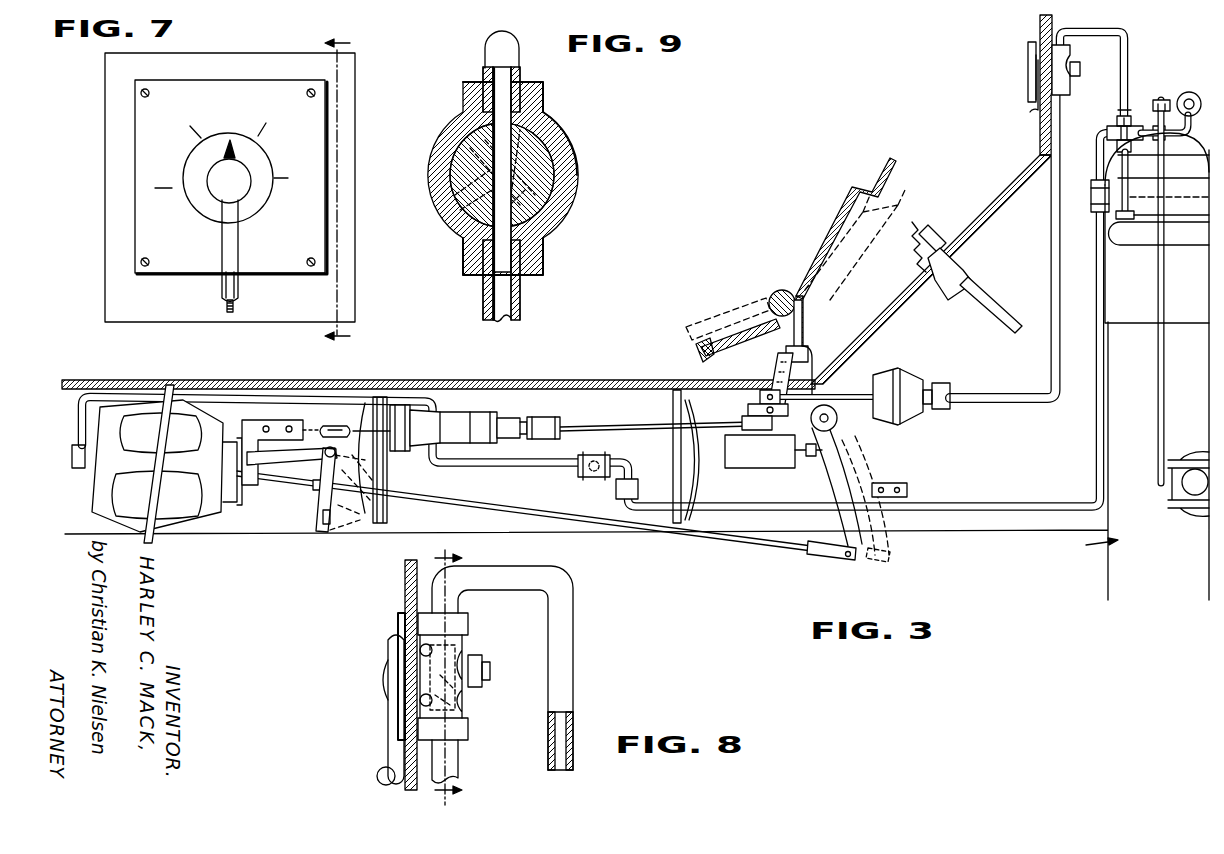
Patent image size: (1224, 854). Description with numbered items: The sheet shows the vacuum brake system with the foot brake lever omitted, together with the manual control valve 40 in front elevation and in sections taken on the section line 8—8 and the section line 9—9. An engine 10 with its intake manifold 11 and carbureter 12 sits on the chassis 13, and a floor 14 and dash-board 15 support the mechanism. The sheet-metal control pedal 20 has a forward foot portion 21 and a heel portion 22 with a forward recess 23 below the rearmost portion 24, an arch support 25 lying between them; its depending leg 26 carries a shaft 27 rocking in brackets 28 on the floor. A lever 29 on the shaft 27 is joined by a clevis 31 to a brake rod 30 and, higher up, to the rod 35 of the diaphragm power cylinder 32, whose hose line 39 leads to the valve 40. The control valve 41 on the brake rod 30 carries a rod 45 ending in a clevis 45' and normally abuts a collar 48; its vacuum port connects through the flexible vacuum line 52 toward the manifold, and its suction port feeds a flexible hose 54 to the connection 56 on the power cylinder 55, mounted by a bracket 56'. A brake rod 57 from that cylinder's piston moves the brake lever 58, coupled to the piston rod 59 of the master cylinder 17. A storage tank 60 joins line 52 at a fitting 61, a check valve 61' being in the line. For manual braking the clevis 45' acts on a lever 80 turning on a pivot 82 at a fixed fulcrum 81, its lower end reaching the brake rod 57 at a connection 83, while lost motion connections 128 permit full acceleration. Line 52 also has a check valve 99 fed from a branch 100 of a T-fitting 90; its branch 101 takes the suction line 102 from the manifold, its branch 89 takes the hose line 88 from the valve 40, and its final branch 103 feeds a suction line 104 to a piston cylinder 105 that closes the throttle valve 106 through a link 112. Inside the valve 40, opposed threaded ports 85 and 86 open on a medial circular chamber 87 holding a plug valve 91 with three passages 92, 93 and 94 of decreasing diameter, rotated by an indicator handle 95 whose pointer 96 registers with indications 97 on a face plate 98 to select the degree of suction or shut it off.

In FIG. 7, the section line 8— 8 is at (337, 187).
In FIG. 8, the section line 9— 9 is at (457, 676).
In FIG. 3, the engine 10 is at (1090, 552).
In FIG. 3, the intake manifold 11 is at (1192, 240).
In FIG. 3, the carbureter 12 is at (1166, 466).
In FIG. 3, the chassis 13 is at (971, 530).
In FIG. 3, the floor 14 is at (296, 381).
In FIG. 7, the dash-board 15 is at (348, 283).
In FIG. 8, the dash-board 15 is at (405, 592).
In FIG. 3, the dash-board 15 is at (1040, 32).
In FIG. 3, the master cylinder 17 is at (770, 454).
In FIG. 3, the foot control pedal 20 is at (848, 189).
In FIG. 3, the forward foot portion 21 is at (840, 214).
In FIG. 3, the heel portion 22 is at (690, 342).
In FIG. 3, the forward recess 23 is at (752, 344).
In FIG. 3, the rearmost portion 24 is at (703, 356).
In FIG. 3, the arch support 25 is at (779, 292).
In FIG. 3, the depending leg 26 is at (802, 318).
In FIG. 3, the shaft 27 is at (806, 344).
In FIG. 3, the brackets 28 is at (813, 362).
In FIG. 3, the lever 29 is at (773, 380).
In FIG. 3, the brake rod 30 is at (692, 421).
In FIG. 3, the clevis 31 is at (750, 411).
In FIG. 3, the power cylinder 32 is at (906, 380).
In FIG. 3, the rod 35 is at (850, 394).
In FIG. 9, the hose line 39 is at (512, 290).
In FIG. 8, the hose line 39 is at (458, 756).
In FIG. 3, the hose line 39 is at (1040, 402).
In FIG. 9, the manual control valve 40 is at (577, 176).
In FIG. 8, the manual control valve 40 is at (466, 650).
In FIG. 3, the manual control valve 40 is at (1074, 68).
In FIG. 3, the control valve 41 is at (472, 406).
In FIG. 3, the rod 45 is at (383, 433).
In FIG. 3, the clevis 45' is at (325, 415).
In FIG. 3, the collar 48 is at (550, 414).
In FIG. 3, the flexible vacuum line 52 is at (531, 468).
In FIG. 3, the flexible hose 54 is at (226, 396).
In FIG. 3, the power cylinder 55 is at (190, 528).
In FIG. 3, the connection 56 is at (66, 469).
In FIG. 3, the bracket 56' is at (280, 475).
In FIG. 3, the brake rod 57 is at (700, 532).
In FIG. 3, the brake lever 58 is at (846, 478).
In FIG. 3, the piston rod 59 is at (815, 458).
In FIG. 3, the storage tank 60 is at (514, 410).
In FIG. 3, the fitting 61 is at (594, 452).
In FIG. 3, the check valve 61' is at (643, 487).
In FIG. 3, the lever 80 is at (348, 500).
In FIG. 3, the fixed fulcrum 81 is at (293, 464).
In FIG. 3, the pivot 82 is at (352, 456).
In FIG. 3, the connection 83 is at (330, 526).
In FIG. 9, the threaded port 85 is at (538, 256).
In FIG. 9, the threaded port 86 is at (540, 88).
In FIG. 9, the medial circular chamber 87 is at (566, 136).
In FIG. 9, the hose line 88 is at (486, 48).
In FIG. 8, the hose line 88 is at (574, 664).
In FIG. 3, the hose line 88 is at (1128, 32).
In FIG. 3, the branch 89 is at (1116, 120).
In FIG. 3, the T-fitting 90 is at (1131, 114).
In FIG. 9, the plug valve 91 is at (455, 152).
In FIG. 9, the passage 92 is at (466, 233).
In FIG. 9, the passage 93 is at (447, 208).
In FIG. 8, the passage 93 is at (387, 680).
In FIG. 9, the passage 94 is at (556, 212).
In FIG. 8, the passage 94 is at (472, 698).
In FIG. 7, the indicator handle 95 is at (224, 246).
In FIG. 8, the indicator handle 95 is at (390, 740).
In FIG. 3, the indicator handle 95 is at (1028, 102).
In FIG. 7, the pointer 96 is at (222, 149).
In FIG. 8, the pointer 96 is at (388, 652).
In FIG. 3, the pointer 96 is at (1028, 54).
In FIG. 7, the indications 97 is at (262, 108).
In FIG. 7, the face plate 98 is at (148, 212).
In FIG. 8, the face plate 98 is at (398, 626).
In FIG. 3, the check valve 99 is at (1093, 194).
In FIG. 3, the branch 100 is at (1109, 129).
In FIG. 3, the branch 101 is at (1158, 143).
In FIG. 3, the suction line 102 is at (1130, 202).
In FIG. 3, the final branch 103 is at (1134, 122).
In FIG. 3, the suction line 104 is at (1201, 152).
In FIG. 3, the piston cylinder 105 is at (1200, 95).
In FIG. 3, the throttle valve 106 is at (1172, 490).
In FIG. 3, the link 112 is at (1157, 276).
In FIG. 3, the lost motion connections 128 is at (322, 500).